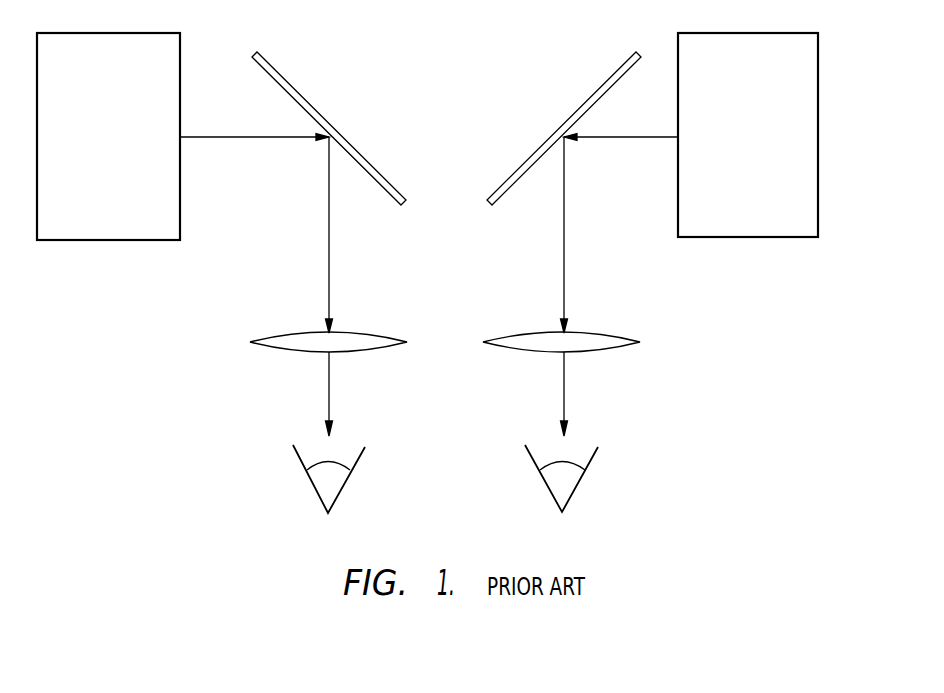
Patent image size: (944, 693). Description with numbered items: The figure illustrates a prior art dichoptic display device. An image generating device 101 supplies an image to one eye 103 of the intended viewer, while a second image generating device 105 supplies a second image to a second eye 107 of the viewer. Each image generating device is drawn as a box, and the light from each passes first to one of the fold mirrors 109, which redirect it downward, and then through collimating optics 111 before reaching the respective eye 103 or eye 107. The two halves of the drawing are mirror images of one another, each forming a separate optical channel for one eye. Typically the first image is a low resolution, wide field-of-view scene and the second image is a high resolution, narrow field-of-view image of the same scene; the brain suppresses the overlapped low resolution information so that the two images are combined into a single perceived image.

The image generating device 101 is at (160, 35).
The eye 103 is at (340, 492).
The second image generating device 105 is at (777, 32).
The second eye 107 is at (573, 490).
The fold mirrors 109 is at (328, 121).
The collimating optics 111 is at (383, 333).